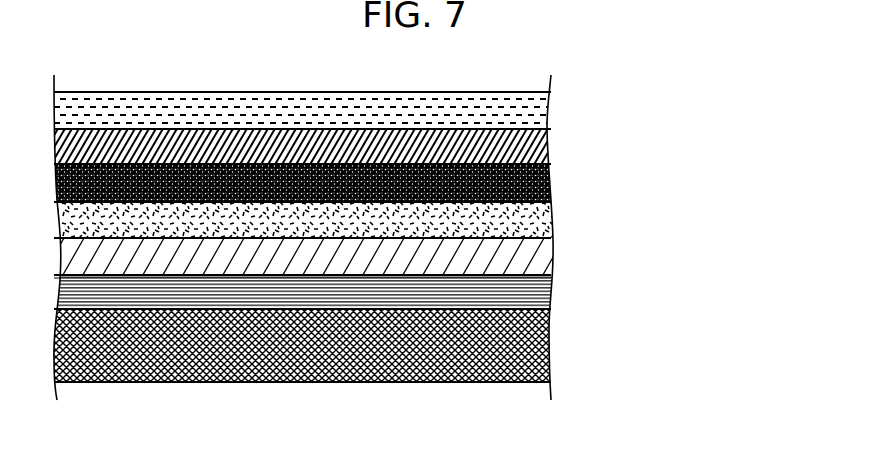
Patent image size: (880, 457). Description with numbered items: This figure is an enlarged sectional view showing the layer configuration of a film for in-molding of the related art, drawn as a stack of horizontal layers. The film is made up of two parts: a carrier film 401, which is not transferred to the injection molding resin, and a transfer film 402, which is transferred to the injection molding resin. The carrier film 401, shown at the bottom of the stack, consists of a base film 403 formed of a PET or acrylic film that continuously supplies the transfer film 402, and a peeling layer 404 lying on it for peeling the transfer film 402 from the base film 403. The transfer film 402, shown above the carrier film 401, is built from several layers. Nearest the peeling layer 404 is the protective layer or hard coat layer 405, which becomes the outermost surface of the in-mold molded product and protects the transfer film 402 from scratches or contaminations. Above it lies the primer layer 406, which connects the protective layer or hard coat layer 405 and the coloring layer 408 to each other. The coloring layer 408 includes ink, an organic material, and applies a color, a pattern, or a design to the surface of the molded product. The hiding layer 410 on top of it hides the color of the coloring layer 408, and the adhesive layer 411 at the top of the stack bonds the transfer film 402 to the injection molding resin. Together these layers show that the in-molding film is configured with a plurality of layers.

The carrier film 401 is at (422, 328).
The transfer film 402 is at (422, 179).
The base film 403 is at (545, 342).
The peeling layer 404 is at (537, 297).
The protective layer or hard coat layer 405 is at (372, 256).
The primer layer 406 is at (540, 220).
The coloring layer 408 is at (545, 182).
The hiding layer 410 is at (545, 147).
The adhesive layer 411 is at (540, 110).